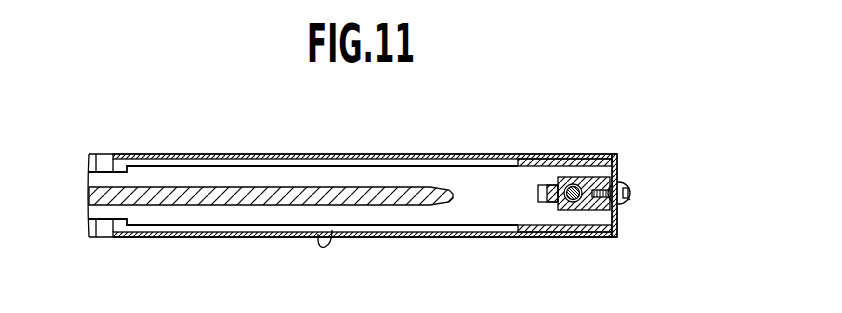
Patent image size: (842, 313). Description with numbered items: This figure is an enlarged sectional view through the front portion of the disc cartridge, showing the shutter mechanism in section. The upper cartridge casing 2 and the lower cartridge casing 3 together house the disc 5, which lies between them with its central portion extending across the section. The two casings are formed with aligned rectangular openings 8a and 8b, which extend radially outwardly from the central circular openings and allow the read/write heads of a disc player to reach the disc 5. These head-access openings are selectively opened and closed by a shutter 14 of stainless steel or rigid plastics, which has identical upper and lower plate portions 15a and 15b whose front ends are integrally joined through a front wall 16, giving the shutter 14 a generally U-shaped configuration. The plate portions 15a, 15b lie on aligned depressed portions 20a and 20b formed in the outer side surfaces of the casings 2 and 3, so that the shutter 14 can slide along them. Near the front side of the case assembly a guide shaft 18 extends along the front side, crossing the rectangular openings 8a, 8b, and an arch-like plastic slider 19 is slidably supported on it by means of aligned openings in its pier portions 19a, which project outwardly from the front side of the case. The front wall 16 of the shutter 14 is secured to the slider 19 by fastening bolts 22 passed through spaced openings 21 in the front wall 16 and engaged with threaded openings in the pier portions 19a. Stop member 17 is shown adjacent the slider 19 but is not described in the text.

The upper cartridge casing 2 is at (583, 177).
The lower cartridge casing 3 is at (562, 215).
The disc 5 is at (178, 196).
The rectangular opening 8a is at (399, 166).
The rectangular opening 8b is at (357, 227).
The shutter 14 is at (435, 237).
The upper plate portion 15a is at (272, 155).
The lower plate portion 15b is at (285, 237).
The front wall 16 is at (615, 220).
The stop member 17 is at (550, 205).
The guide shaft 18 is at (570, 184).
The slider 19 is at (583, 213).
The pier portion 19a is at (622, 182).
The depressed portion 20a is at (458, 155).
The depressed portion 20b is at (332, 230).
The spaced opening 21 is at (626, 186).
The fastening bolt 22 is at (627, 202).